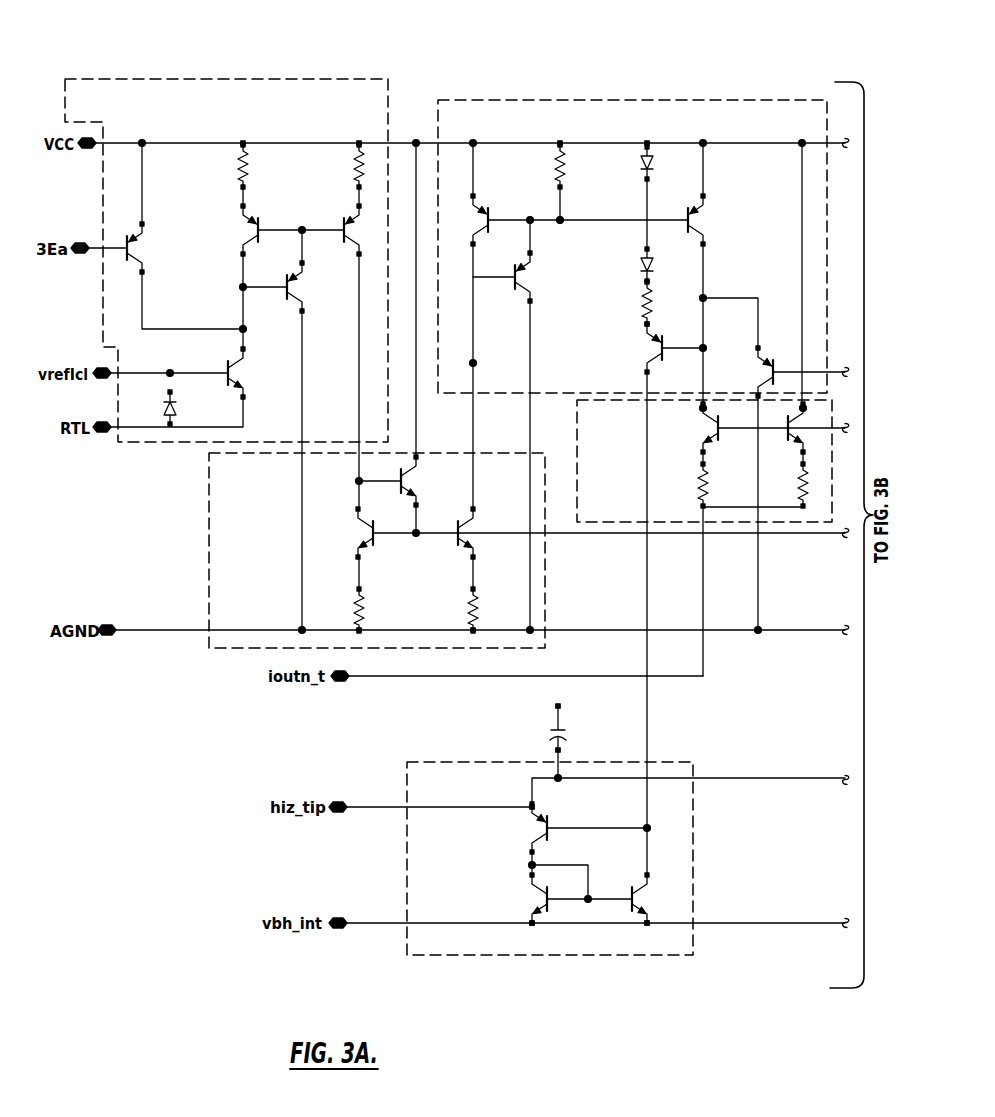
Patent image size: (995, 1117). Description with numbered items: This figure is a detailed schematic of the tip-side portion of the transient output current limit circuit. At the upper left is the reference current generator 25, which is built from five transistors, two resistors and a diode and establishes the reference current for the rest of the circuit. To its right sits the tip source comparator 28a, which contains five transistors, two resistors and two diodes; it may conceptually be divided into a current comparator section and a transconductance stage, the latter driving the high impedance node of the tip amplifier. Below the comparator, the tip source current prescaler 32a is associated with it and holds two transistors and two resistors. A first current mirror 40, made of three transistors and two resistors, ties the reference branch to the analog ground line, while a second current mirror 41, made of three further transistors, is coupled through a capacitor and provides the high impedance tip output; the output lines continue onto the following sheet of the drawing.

The reference current generator 25 is at (264, 79).
The tip source comparator 28a is at (588, 100).
The tip source current prescaler 32a is at (609, 522).
The current mirror 40 is at (210, 649).
The current mirror 41 is at (523, 955).